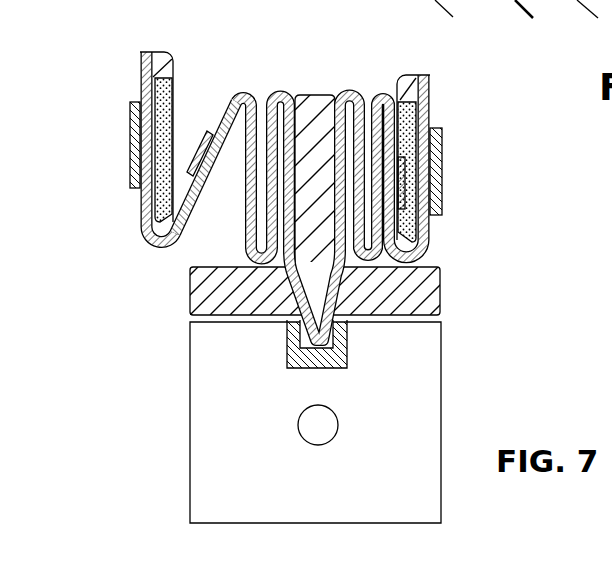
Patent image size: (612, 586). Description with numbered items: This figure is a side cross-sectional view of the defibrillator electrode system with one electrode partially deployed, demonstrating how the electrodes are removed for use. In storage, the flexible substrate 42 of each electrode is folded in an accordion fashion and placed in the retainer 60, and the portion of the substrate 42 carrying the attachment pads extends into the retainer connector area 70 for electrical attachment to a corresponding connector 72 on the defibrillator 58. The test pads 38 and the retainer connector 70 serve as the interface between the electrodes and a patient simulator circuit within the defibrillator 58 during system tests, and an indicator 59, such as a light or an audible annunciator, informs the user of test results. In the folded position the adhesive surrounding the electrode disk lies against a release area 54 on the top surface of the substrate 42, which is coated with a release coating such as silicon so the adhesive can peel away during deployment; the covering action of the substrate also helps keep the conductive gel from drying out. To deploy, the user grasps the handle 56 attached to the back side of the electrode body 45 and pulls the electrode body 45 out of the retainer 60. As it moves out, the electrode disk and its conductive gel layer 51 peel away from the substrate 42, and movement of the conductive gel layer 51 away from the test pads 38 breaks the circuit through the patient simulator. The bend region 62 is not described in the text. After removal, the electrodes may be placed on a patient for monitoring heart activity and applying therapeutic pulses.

The test pad 38 is at (206, 134).
The flexible substrate 42 is at (255, 100).
The electrode body 45 is at (176, 50).
The conductive gel layer 51 is at (170, 88).
The release area 54 is at (238, 92).
The handle 56 is at (135, 128).
The defibrillator 58 is at (395, 390).
The indicator 59 is at (310, 427).
The retainer 60 is at (311, 110).
The bend 62 is at (222, 241).
The retainer connector area 70 is at (313, 332).
The connector 72 is at (347, 360).